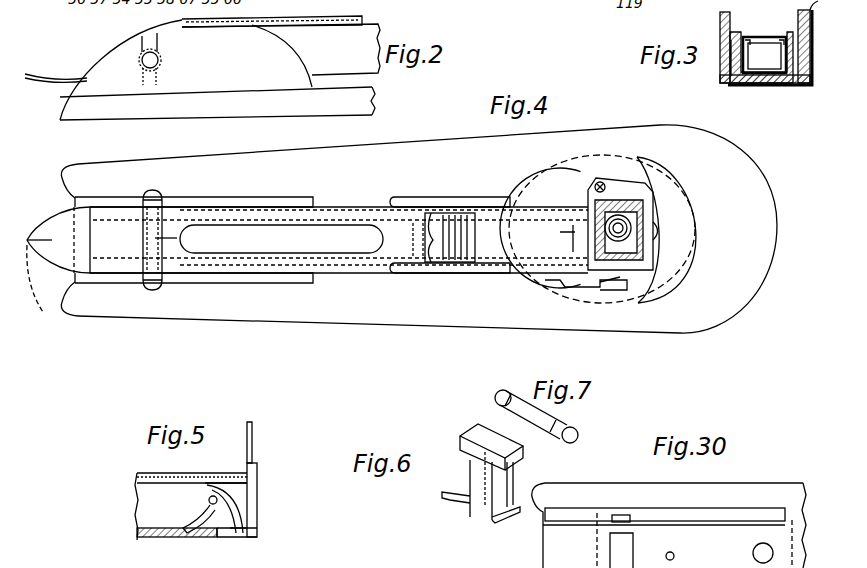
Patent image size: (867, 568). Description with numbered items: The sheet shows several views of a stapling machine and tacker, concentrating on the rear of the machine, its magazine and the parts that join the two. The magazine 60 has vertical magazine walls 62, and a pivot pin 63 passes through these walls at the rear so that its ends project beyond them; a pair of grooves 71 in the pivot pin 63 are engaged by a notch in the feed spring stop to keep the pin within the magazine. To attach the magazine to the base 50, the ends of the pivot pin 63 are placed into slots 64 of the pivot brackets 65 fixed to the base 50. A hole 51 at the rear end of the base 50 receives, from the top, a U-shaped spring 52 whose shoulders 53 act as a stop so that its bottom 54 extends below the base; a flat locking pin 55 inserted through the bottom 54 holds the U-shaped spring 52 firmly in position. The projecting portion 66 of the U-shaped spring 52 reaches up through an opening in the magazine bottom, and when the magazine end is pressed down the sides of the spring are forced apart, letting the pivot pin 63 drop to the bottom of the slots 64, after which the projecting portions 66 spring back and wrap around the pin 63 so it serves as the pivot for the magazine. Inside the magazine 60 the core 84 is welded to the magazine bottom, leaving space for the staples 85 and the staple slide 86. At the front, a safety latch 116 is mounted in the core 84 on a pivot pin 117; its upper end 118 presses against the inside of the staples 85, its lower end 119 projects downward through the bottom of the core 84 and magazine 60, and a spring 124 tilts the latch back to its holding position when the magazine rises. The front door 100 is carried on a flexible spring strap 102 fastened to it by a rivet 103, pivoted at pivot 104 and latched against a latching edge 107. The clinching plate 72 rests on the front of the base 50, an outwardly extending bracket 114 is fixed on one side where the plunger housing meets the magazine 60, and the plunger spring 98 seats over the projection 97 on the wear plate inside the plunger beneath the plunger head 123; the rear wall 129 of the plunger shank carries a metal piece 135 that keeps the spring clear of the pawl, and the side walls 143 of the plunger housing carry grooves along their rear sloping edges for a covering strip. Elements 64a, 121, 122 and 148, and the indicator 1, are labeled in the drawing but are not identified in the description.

In FIG. 4, the camera assembly 1 is at (791, 227).
In FIG. 2, the base 50 is at (68, 108).
In FIG. 4, the base 50 is at (84, 178).
In FIG. 30, the base 50 is at (773, 497).
In FIG. 30, the hole 51 is at (620, 556).
In FIG. 6, the U-shaped spring 52 is at (473, 473).
In FIG. 6, the shoulders 53 is at (470, 467).
In FIG. 6, the bottom of the U-shaped spring 54 is at (478, 511).
In FIG. 6, the flat locking pin 55 is at (455, 498).
In FIG. 3, the magazine 60 is at (784, 86).
In FIG. 5, the magazine 60 is at (165, 537).
In FIG. 2, the vertical magazine walls 62 is at (348, 60).
In FIG. 3, the vertical magazine walls 62 is at (728, 62).
In FIG. 4, the vertical magazine walls 62 is at (352, 273).
In FIG. 2, the pivot pin 63 is at (140, 70).
In FIG. 4, the pivot pin 63 is at (151, 190).
In FIG. 7, the pivot pin 63 is at (532, 420).
In FIG. 2, the slots 64 is at (142, 50).
In FIG. 30, the stop tab 64a is at (622, 515).
In FIG. 2, the pivot brackets 65 is at (252, 68).
In FIG. 4, the pivot brackets 65 is at (196, 205).
In FIG. 30, the pivot brackets 65 is at (546, 521).
In FIG. 6, the projecting portion 66 is at (459, 439).
In FIG. 7, the grooves 71 is at (512, 397).
In FIG. 4, the clinching plate 72 is at (688, 205).
In FIG. 3, the core 84 is at (760, 84).
In FIG. 3, the staples 85 is at (763, 37).
In FIG. 4, the staples 85 is at (443, 263).
In FIG. 4, the staple slide 86 is at (435, 237).
In FIG. 4, the projection 97 is at (643, 245).
In FIG. 4, the plunger spring 98 is at (625, 214).
In FIG. 4, the front door 100 is at (660, 205).
In FIG. 5, the front door 100 is at (257, 480).
In FIG. 4, the flexible spring strap 102 is at (643, 195).
In FIG. 4, the rivet 103 is at (658, 228).
In FIG. 4, the pivot 104 is at (599, 182).
In FIG. 4, the latching edge 107 is at (640, 279).
In FIG. 4, the bracket 114 is at (613, 198).
In FIG. 5, the safety latch 116 is at (240, 508).
In FIG. 5, the pivot pin 117 is at (213, 505).
In FIG. 5, the upper end 118 is at (207, 483).
In FIG. 5, the lower end 119 is at (243, 537).
In FIG. 3, the retaining tab 121 is at (749, 36).
In FIG. 4, the end plate 122 is at (662, 250).
In FIG. 5, the end plate 122 is at (252, 442).
In FIG. 4, the plunger head 123 is at (706, 208).
In FIG. 5, the spring 124 is at (210, 507).
In FIG. 4, the rear wall 129 is at (570, 207).
In FIG. 4, the metal piece 135 is at (587, 217).
In FIG. 3, the side walls 143 is at (720, 27).
In FIG. 4, the side walls 143 is at (472, 274).
In FIG. 2, the leaf spring 148 is at (50, 76).